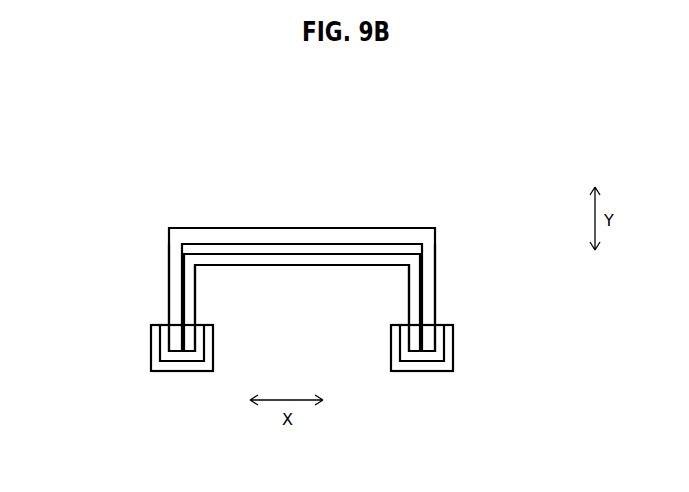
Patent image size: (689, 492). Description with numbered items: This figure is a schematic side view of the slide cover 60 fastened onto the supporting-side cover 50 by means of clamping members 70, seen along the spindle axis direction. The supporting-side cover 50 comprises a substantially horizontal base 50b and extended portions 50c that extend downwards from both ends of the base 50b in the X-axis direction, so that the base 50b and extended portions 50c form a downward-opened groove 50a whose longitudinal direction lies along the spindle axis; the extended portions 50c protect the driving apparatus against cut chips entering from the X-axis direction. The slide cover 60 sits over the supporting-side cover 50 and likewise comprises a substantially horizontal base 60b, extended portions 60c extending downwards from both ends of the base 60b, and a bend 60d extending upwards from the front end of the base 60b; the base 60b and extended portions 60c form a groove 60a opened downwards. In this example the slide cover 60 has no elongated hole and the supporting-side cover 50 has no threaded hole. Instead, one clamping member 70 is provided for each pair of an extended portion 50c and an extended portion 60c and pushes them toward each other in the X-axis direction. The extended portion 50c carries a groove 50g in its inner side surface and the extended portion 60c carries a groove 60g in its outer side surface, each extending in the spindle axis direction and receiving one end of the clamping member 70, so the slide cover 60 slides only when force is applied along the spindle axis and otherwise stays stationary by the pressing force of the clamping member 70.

The slide cover 60 is at (435, 242).
The groove 60a is at (222, 251).
The base 60b is at (405, 240).
The extended portion 60c is at (168, 270).
The bend 60d is at (188, 228).
The groove 60g is at (168, 326).
The supporting-side cover 50 is at (421, 297).
The inner surface of inner member 50a is at (293, 267).
The base 50b is at (383, 248).
The extended portion 50c is at (196, 316).
The groove 50g is at (205, 326).
The clamping member 70 is at (152, 370).